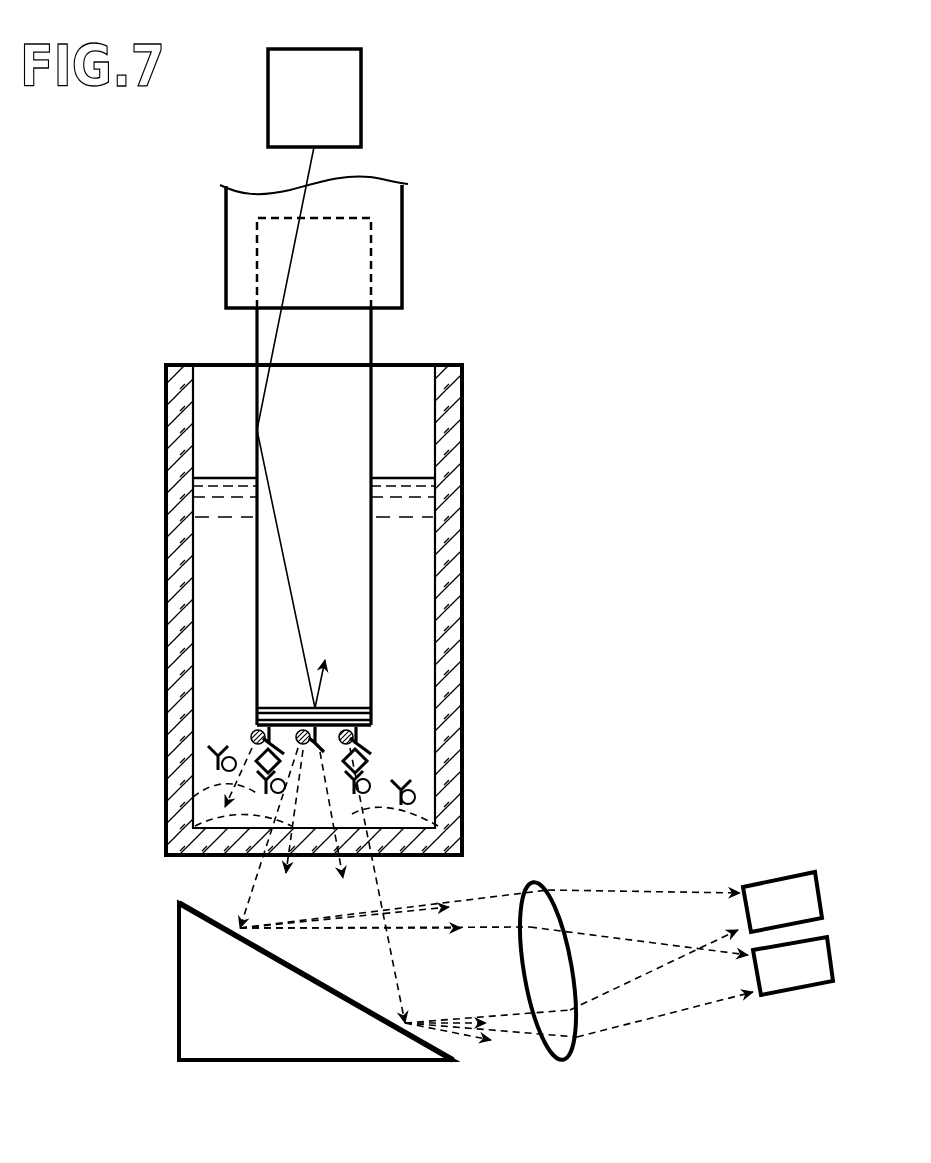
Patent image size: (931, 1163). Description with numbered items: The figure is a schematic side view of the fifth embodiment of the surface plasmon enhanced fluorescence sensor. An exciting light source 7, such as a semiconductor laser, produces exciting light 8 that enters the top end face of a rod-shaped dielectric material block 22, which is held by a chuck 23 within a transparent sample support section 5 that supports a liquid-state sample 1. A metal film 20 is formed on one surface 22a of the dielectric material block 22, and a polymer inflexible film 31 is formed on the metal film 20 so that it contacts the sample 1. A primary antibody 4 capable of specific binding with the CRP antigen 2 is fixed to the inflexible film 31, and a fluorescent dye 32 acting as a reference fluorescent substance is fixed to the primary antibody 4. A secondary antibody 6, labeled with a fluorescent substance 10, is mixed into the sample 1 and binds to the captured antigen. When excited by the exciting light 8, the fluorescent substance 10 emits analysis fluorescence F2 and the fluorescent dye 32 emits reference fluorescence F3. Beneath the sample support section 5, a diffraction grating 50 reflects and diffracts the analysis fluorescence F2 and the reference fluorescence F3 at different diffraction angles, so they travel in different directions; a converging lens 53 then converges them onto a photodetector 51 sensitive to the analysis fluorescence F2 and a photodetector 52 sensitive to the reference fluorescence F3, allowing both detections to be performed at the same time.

The exciting light source 7 is at (361, 97).
The chuck 23 is at (402, 240).
The exciting light 8 is at (278, 338).
The sample support section 5 is at (462, 382).
The dielectric material block 22 is at (343, 418).
The sample 1 is at (417, 538).
The metal film 20 is at (368, 706).
The inflexible film 31 is at (365, 716).
The surface of the dielectric material block 22a is at (365, 728).
The CRP antigen 2 is at (362, 762).
The secondary antibody 6 is at (413, 782).
The fluorescent substance 10 is at (415, 797).
The fluorescent dye 32 is at (252, 733).
The primary antibody 4 is at (317, 749).
The analysis fluorescence F2 is at (463, 855).
The reference fluorescence F3 is at (167, 828).
The diffraction grating 50 is at (232, 1052).
The converging lens 53 is at (563, 1060).
The photodetector 51 is at (818, 893).
The photodetector 52 is at (833, 960).